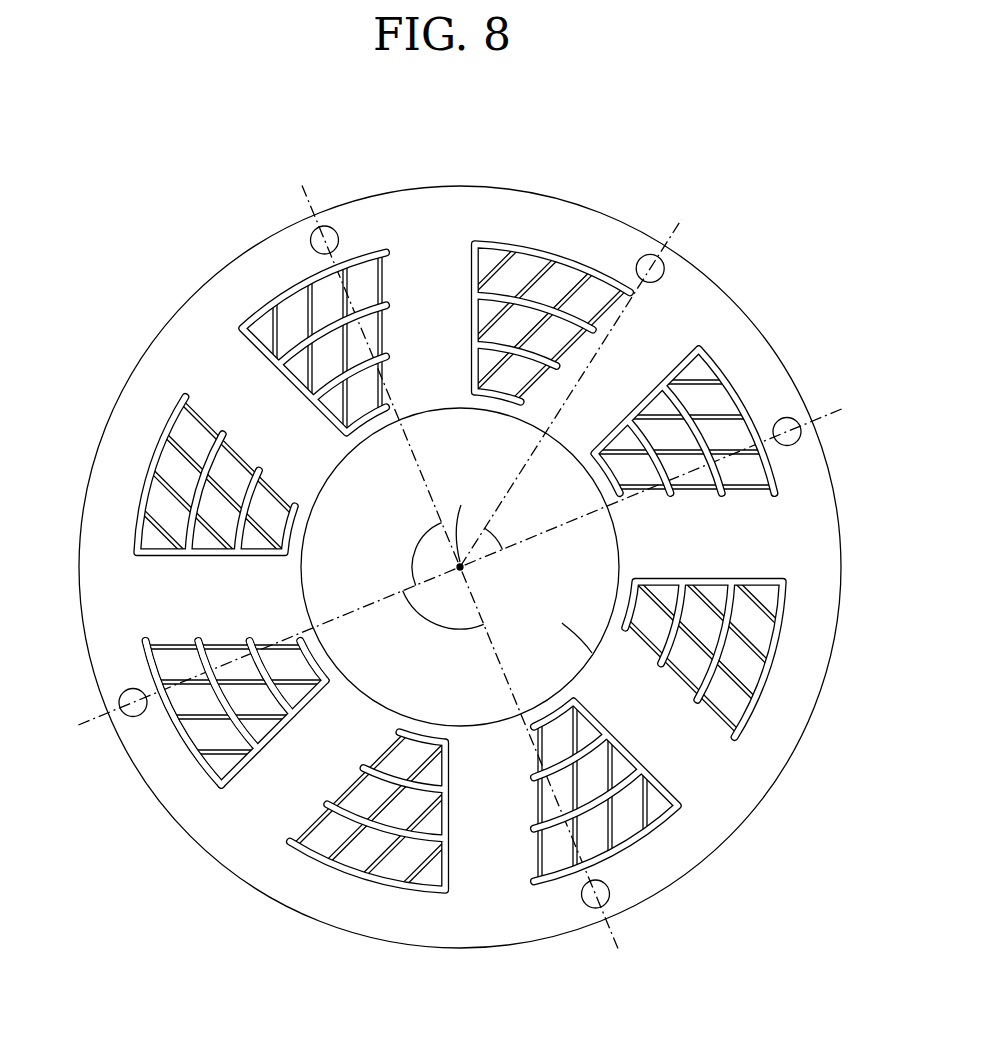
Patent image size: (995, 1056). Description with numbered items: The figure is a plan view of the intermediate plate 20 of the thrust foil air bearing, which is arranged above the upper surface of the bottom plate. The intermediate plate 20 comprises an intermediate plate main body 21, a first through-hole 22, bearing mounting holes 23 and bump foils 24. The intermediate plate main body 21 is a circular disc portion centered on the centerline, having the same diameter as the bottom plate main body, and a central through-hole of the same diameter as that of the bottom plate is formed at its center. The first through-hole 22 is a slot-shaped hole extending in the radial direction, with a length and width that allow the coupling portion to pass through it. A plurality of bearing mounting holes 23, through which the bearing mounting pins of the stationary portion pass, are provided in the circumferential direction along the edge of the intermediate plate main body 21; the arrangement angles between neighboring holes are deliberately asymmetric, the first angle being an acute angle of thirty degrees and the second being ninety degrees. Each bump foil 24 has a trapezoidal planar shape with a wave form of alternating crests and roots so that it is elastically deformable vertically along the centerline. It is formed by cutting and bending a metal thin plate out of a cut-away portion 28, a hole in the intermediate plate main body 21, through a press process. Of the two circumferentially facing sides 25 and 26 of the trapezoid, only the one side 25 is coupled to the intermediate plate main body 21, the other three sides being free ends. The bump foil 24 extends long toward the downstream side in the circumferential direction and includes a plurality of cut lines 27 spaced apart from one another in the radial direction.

The intermediate plate 20 is at (736, 223).
The intermediate plate main body 21 is at (812, 505).
The first through-hole 22 is at (212, 741).
The bearing mounting hole 23 is at (801, 440).
The bump foil 24 is at (172, 667).
The one side 25 is at (167, 637).
The other side 26 is at (283, 728).
The cut lines 27 is at (243, 641).
The cut-away portion 28 is at (152, 672).